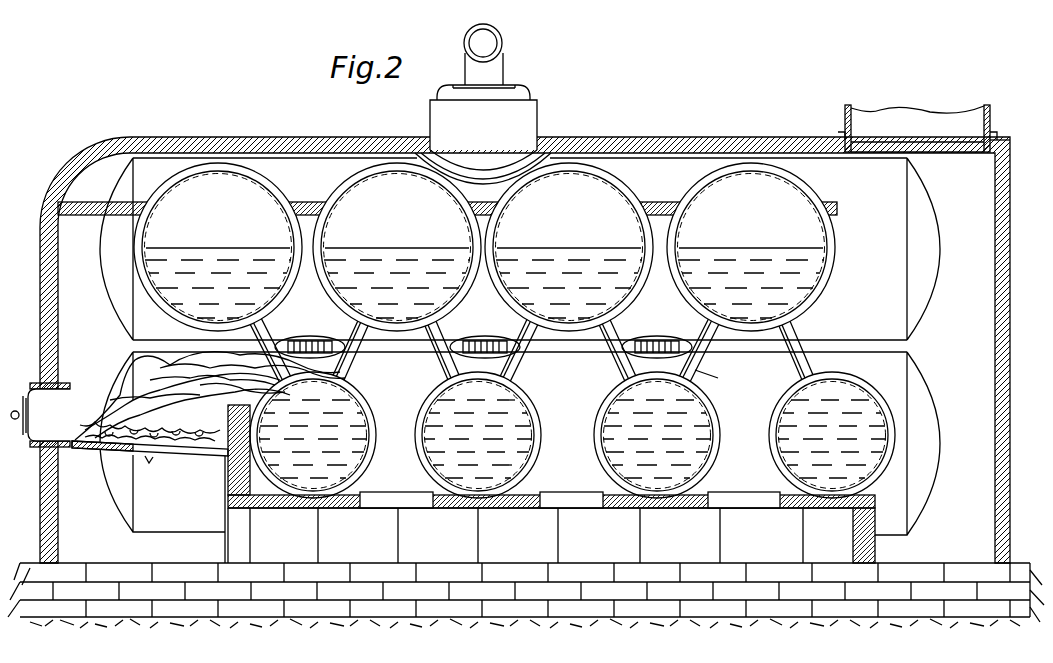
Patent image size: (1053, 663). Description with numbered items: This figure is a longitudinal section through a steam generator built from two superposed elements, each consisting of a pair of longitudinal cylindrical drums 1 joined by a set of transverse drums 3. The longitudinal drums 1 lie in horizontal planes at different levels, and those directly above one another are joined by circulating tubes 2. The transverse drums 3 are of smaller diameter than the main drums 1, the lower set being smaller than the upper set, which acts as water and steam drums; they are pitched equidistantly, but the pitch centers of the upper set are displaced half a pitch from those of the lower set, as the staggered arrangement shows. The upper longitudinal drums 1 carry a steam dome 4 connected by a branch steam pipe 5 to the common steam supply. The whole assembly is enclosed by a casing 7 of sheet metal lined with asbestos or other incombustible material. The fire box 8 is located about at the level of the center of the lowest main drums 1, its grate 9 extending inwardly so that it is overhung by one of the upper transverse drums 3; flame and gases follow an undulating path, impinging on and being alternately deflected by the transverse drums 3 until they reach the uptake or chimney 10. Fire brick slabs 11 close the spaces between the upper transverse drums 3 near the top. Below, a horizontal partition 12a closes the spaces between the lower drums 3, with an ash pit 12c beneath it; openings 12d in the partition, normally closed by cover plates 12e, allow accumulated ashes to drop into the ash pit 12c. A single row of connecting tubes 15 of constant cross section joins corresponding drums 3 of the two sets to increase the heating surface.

The longitudinal cylindrical drum 1 is at (520, 360).
The circulating tube 2 is at (655, 340).
The transverse drum 3 is at (514, 330).
The steam dome 4 is at (483, 134).
The branch steam pipe 5 is at (497, 43).
The inclosing casing 7 is at (1011, 226).
The fire box 8 is at (162, 392).
The grate 9 is at (173, 456).
The uptake or chimney 10 is at (917, 128).
The fire brick slab 11 is at (143, 203).
The horizontal partition 12a is at (335, 508).
The ash pit 12c is at (540, 535).
The opening 12d is at (418, 508).
The cover plate 12e is at (572, 493).
The connecting tube 15 is at (792, 360).